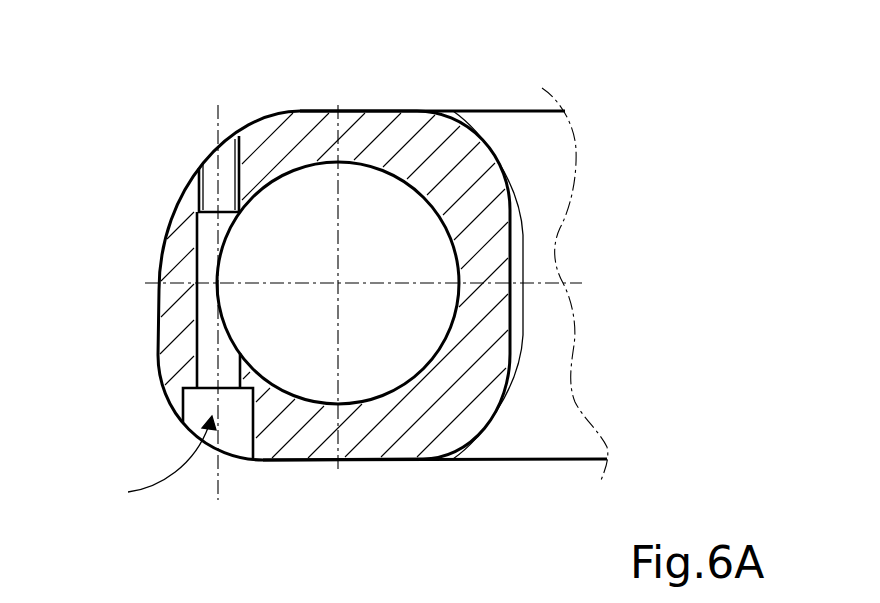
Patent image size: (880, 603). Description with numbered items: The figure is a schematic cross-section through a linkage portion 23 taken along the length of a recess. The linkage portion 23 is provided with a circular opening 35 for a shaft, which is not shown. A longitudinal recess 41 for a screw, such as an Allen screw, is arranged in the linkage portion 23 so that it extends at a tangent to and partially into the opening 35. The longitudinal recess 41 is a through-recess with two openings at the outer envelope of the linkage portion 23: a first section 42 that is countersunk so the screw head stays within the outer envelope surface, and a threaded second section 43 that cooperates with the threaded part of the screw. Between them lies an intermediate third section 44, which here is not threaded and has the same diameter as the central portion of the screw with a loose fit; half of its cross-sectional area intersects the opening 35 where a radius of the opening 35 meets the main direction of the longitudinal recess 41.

The linkage portion 23 is at (500, 110).
The opening 35 is at (373, 207).
The longitudinal recess 41 is at (153, 462).
The first section 42 is at (190, 390).
The second section 43 is at (218, 180).
The third section 44 is at (207, 303).